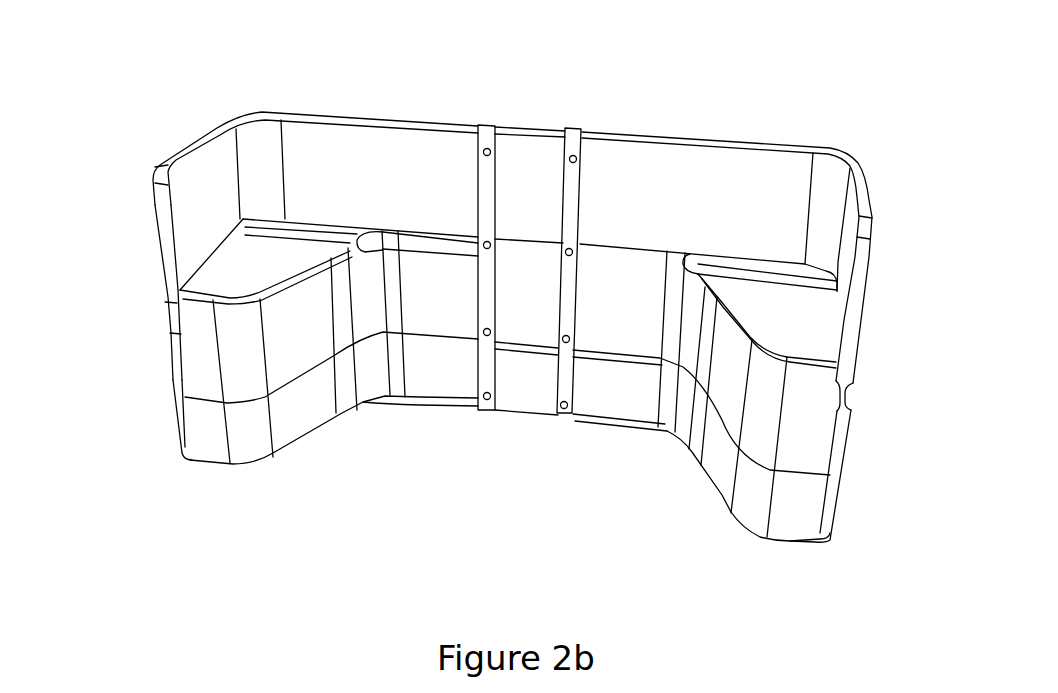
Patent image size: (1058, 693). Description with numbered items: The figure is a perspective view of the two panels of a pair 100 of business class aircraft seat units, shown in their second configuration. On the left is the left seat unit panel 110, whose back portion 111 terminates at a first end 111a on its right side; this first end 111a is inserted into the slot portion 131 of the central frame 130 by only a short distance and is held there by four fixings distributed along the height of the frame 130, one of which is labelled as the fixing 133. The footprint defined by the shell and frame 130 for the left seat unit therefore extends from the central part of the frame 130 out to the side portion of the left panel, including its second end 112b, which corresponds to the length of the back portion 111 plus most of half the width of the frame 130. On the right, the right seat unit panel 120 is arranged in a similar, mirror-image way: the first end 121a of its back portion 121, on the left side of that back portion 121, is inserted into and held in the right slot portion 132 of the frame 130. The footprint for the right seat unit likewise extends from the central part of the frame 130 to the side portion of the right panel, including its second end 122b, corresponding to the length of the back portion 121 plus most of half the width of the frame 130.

The pair of aircraft seat units 100 is at (760, 60).
The left seat unit panel 110 is at (298, 133).
The back portion 111 is at (393, 188).
The first end 111a is at (495, 383).
The second end 112b is at (181, 426).
The right seat unit panel 120 is at (770, 160).
The back portion 121 is at (742, 207).
The first end 121a is at (565, 410).
The second end 122b is at (833, 498).
The frame 130 is at (534, 223).
The slot portion 131 is at (489, 128).
The right slot portion 132 is at (578, 134).
The fixing 133 is at (485, 395).